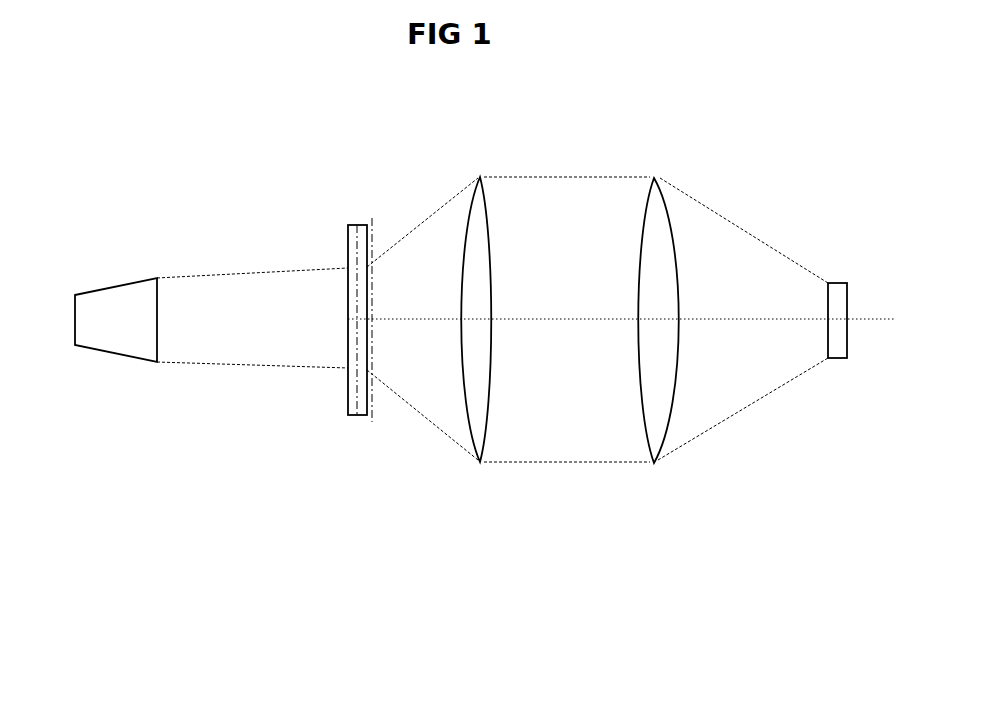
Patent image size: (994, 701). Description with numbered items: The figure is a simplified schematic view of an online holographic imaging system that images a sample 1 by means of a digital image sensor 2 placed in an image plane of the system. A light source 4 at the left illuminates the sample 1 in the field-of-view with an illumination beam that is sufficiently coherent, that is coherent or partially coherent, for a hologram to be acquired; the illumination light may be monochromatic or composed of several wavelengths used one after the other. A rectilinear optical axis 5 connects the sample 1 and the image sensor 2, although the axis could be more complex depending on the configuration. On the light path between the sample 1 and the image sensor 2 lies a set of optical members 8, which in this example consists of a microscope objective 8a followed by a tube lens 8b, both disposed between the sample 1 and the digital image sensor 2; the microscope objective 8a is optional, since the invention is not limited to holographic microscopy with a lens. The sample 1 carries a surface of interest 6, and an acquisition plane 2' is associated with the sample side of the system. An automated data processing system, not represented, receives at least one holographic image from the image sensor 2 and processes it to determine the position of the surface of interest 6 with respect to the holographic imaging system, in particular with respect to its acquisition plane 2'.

The sample 1 is at (348, 248).
The digital image sensor 2 is at (861, 316).
The acquisition plane 2' is at (389, 306).
The light source 4 is at (116, 286).
The optical axis 5 is at (736, 332).
The surface of interest 6 is at (357, 352).
The set of optical members 8 is at (576, 269).
The microscope objective 8a is at (483, 175).
The tube lens 8b is at (657, 175).